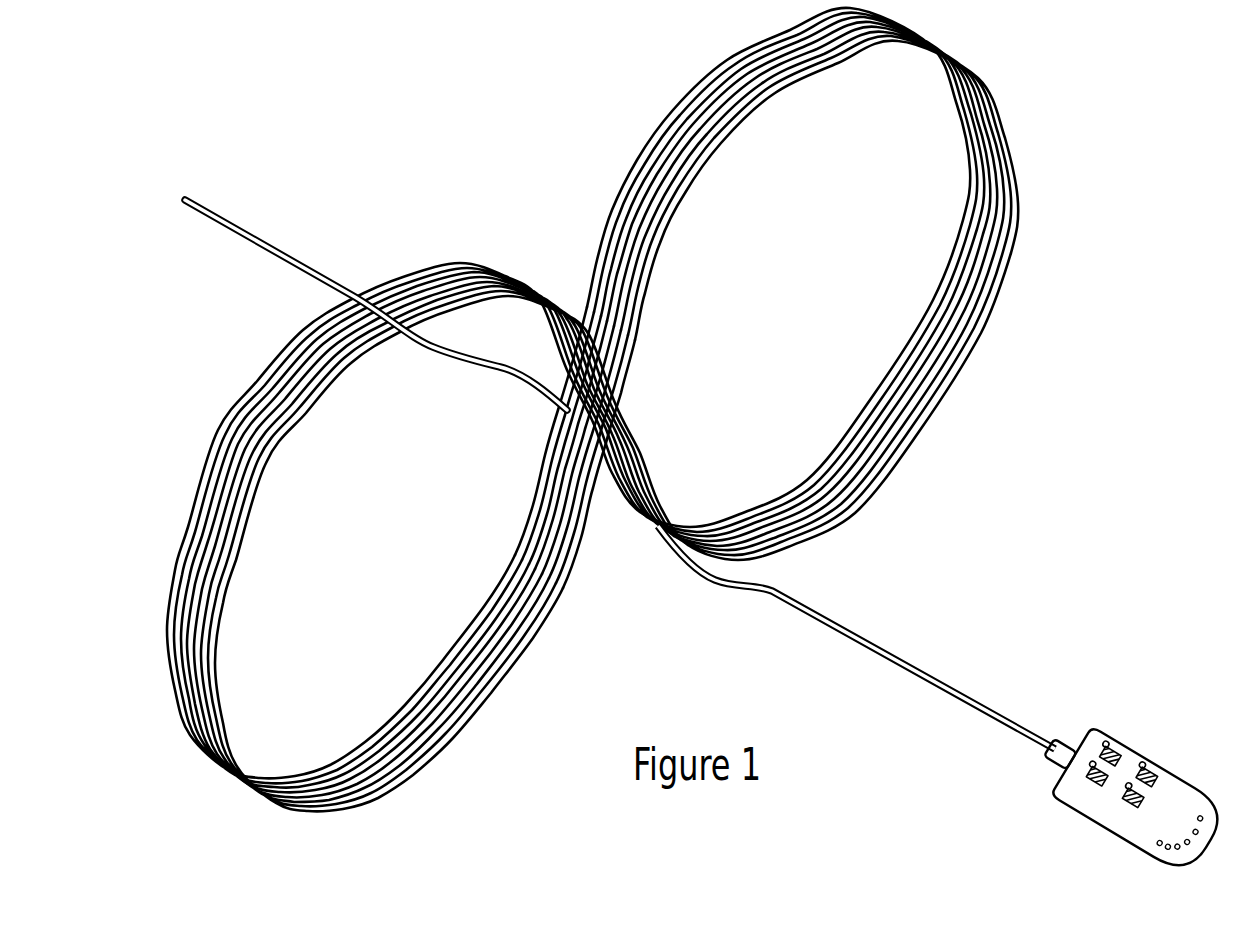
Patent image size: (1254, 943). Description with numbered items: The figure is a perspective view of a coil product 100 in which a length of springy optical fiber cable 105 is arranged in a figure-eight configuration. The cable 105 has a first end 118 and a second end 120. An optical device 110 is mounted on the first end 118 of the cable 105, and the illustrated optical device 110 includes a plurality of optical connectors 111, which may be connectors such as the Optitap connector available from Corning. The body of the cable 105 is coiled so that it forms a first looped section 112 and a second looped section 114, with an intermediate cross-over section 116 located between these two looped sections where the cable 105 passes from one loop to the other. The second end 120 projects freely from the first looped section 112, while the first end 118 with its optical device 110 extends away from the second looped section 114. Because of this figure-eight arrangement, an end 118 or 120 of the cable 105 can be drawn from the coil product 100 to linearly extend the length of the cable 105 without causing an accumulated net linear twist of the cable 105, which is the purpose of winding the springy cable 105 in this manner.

The coil product 100 is at (1025, 43).
The springy cable 105 is at (700, 581).
The optical device 110 is at (1170, 777).
The optical connectors 111 is at (1145, 768).
The first looped section 112 is at (338, 808).
The second looped section 114 is at (1010, 240).
The intermediate cross-over section 116 is at (578, 296).
The first end 118 is at (1037, 737).
The second end 120 is at (192, 196).